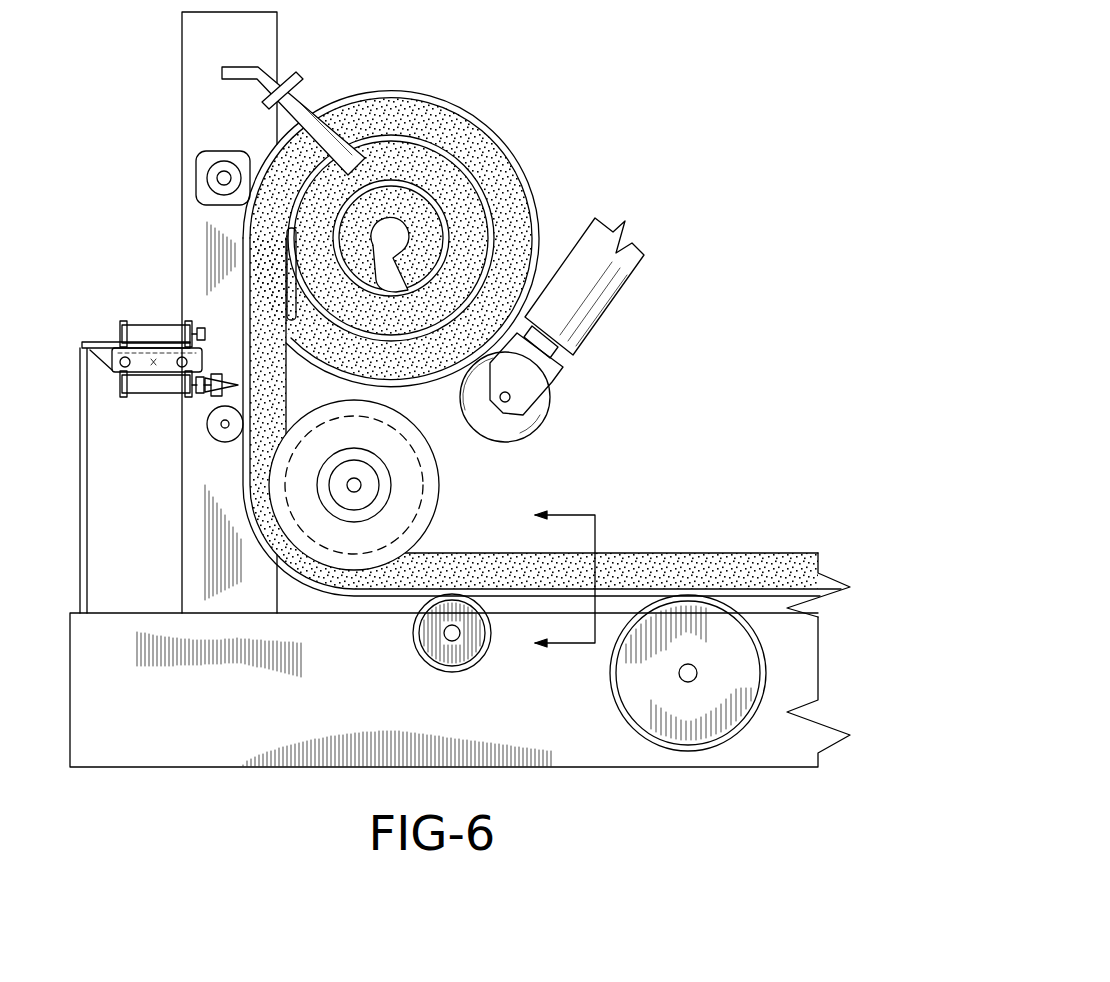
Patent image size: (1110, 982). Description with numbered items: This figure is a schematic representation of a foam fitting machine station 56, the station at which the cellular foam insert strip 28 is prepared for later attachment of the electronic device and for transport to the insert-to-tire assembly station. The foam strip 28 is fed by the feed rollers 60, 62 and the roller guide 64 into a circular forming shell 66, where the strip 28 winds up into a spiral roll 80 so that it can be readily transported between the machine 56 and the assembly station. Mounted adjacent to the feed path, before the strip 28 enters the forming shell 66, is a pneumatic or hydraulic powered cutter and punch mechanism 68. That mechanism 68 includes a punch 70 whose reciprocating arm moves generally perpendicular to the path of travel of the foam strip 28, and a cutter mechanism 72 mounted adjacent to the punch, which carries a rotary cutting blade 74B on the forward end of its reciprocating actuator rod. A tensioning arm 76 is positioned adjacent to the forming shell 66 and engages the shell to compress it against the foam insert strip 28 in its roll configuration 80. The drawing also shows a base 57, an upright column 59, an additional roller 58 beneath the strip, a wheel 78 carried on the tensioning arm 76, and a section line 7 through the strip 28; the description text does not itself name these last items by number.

The section line 7- 7 is at (553, 582).
The foam insert strip 28 is at (715, 553).
The foam fitting machine station 56 is at (58, 718).
The base 57 is at (210, 745).
The drive roller 58 is at (641, 688).
The upright column 59 is at (205, 562).
The feed roller 60 is at (432, 643).
The feed roller 62 is at (217, 433).
The roller guide 64 is at (298, 107).
The circular forming shell 66 is at (440, 101).
The cutter and punch mechanism 68 is at (106, 322).
The punch 70 is at (163, 333).
The cutter mechanism 72 is at (148, 387).
The rotary cutting blade 74B is at (212, 393).
The tensioning arm 76 is at (602, 312).
The press wheel 78 is at (526, 420).
The spiral roll 80 is at (497, 195).